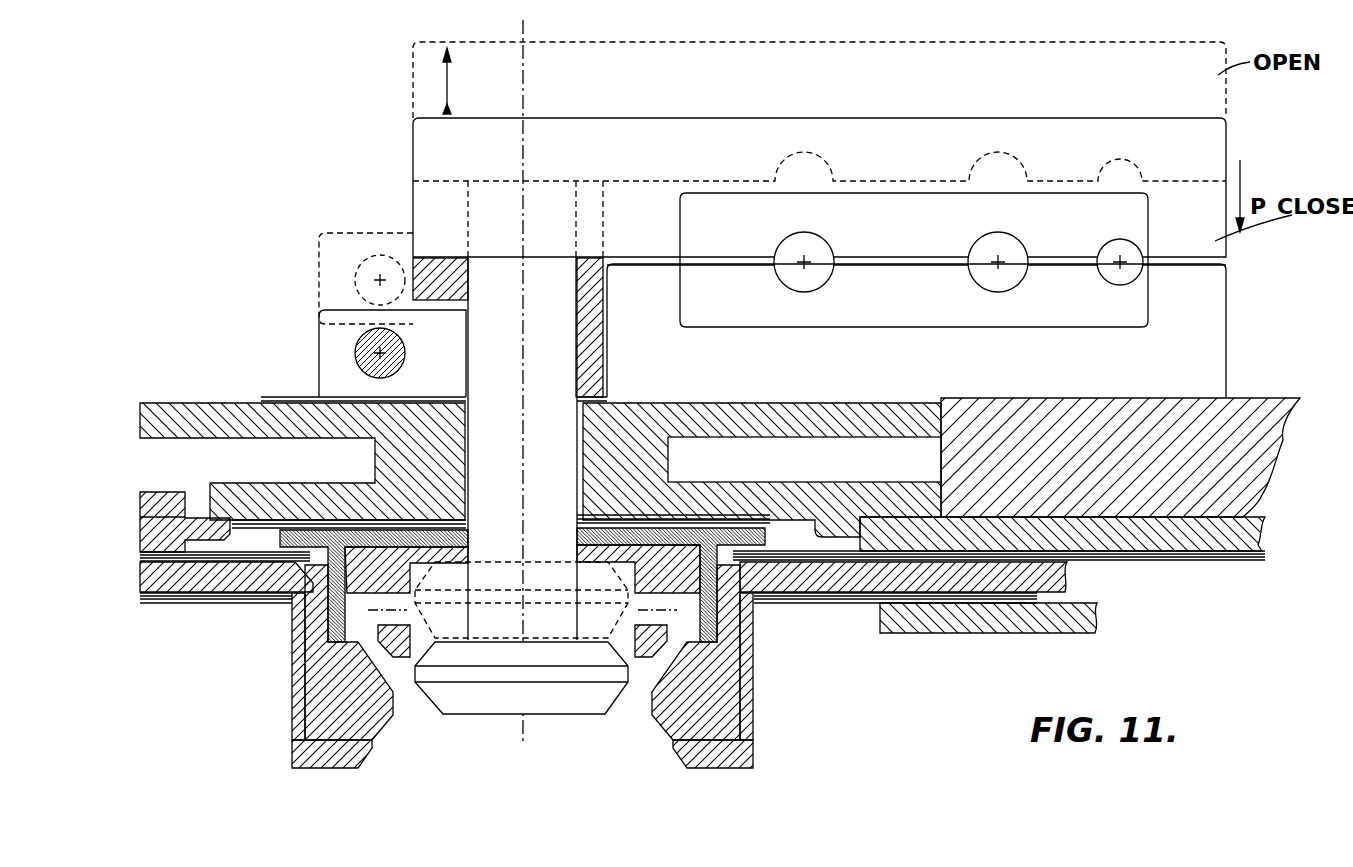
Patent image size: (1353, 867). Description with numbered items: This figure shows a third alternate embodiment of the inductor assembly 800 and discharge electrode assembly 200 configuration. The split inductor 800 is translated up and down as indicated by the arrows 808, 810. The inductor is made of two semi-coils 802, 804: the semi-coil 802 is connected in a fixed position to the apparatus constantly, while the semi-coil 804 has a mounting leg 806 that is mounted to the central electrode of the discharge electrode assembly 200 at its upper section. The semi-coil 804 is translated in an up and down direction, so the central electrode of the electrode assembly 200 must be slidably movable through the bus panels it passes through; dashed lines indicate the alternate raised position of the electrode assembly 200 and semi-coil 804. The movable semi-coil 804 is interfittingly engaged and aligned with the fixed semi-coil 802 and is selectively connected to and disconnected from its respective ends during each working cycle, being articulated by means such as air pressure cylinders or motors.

The split inductor 800 is at (1141, 74).
The semi-coil 802 is at (1205, 352).
The semi-coil 804 is at (1205, 150).
The mounting leg 806 is at (333, 356).
The arrow 808 is at (445, 82).
The arrow 810 is at (1243, 178).
The discharge electrode assembly 200 is at (585, 738).